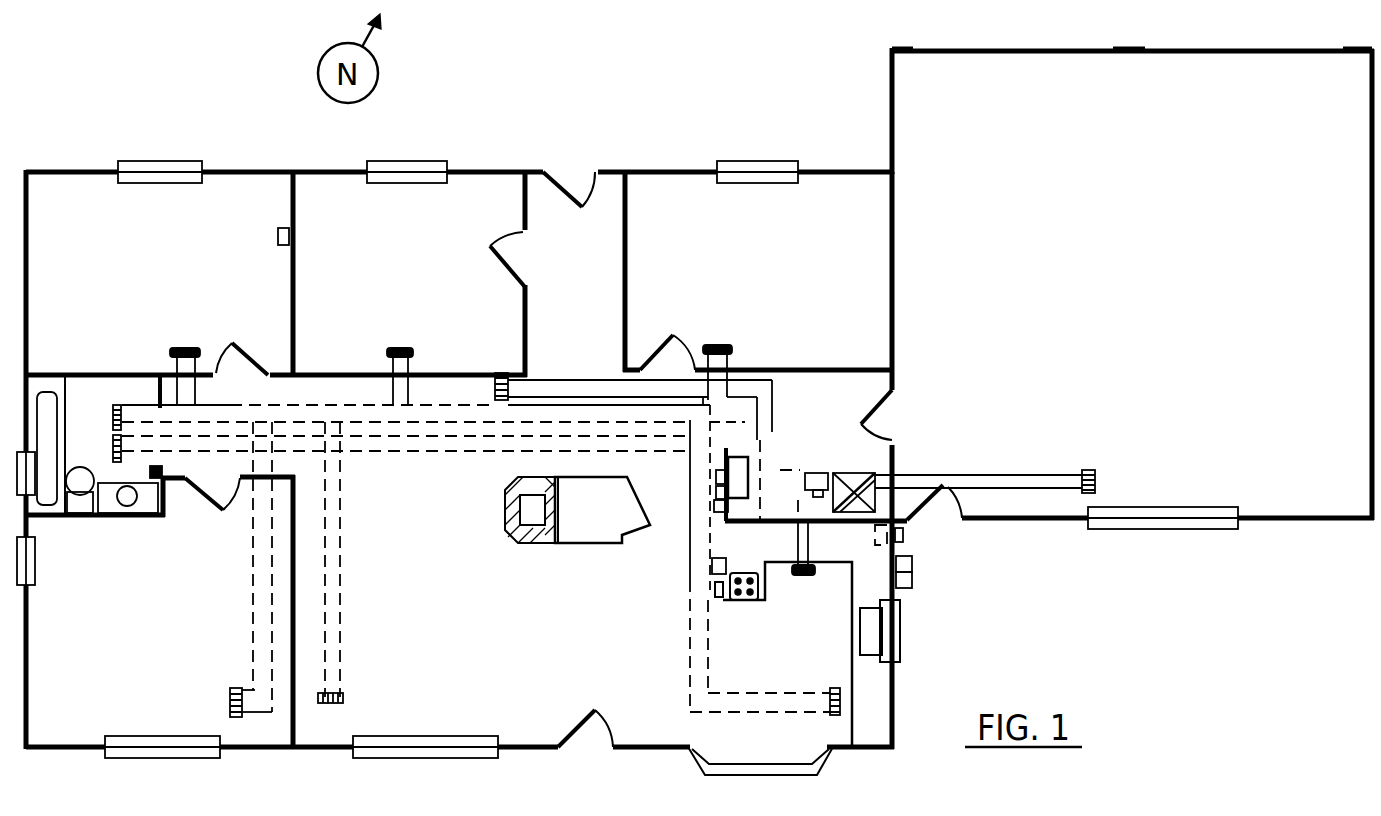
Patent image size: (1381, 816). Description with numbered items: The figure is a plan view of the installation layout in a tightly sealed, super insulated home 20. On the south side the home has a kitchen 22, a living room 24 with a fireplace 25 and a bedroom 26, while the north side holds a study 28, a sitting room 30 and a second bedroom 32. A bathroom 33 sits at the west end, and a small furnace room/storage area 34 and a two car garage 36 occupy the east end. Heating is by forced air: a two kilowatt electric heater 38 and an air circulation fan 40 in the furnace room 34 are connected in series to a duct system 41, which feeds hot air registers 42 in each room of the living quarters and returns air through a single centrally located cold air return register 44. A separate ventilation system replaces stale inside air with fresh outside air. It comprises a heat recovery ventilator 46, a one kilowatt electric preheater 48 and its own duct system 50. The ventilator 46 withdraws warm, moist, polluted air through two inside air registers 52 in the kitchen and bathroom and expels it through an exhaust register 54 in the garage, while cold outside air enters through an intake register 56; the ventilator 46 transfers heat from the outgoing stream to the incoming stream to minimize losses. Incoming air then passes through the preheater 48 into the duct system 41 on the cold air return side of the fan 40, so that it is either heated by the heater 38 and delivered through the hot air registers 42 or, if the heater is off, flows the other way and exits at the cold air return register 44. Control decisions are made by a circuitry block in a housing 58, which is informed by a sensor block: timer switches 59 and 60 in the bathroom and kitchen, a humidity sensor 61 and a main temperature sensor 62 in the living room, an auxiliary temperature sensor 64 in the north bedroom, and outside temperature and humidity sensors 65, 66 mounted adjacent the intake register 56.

The home 20 is at (630, 108).
The kitchen 22 is at (830, 667).
The living room 24 is at (465, 707).
The fireplace 25 is at (505, 517).
The bedroom 26 is at (80, 722).
The study 28 is at (807, 205).
The sitting room 30 is at (473, 198).
The bedroom 32 is at (82, 197).
The bathroom 33 is at (107, 387).
The furnace room/storage area 34 is at (840, 387).
The two car garage 36 is at (1038, 83).
The electric heater 38 is at (740, 470).
The air circulation fan 40 is at (717, 508).
The duct system 41 is at (533, 412).
The hot air registers 42 is at (187, 348).
The cold air return register 44 is at (497, 388).
The heat recovery ventilator 46 is at (875, 470).
The electric preheater 48 is at (817, 475).
The duct system 50 is at (998, 460).
The inside air registers 52 is at (112, 443).
The exhaust register 54 is at (1112, 483).
The intake register 56 is at (903, 537).
The housing 58 is at (715, 590).
The timer switch 59 is at (163, 503).
The timer switch 60 is at (717, 567).
The humidity sensor 61 is at (712, 498).
The main temperature sensor 62 is at (713, 480).
The auxiliary temperature sensor 64 is at (277, 237).
The outside temperature sensor 65 is at (912, 565).
The outside humidity sensor 66 is at (912, 582).